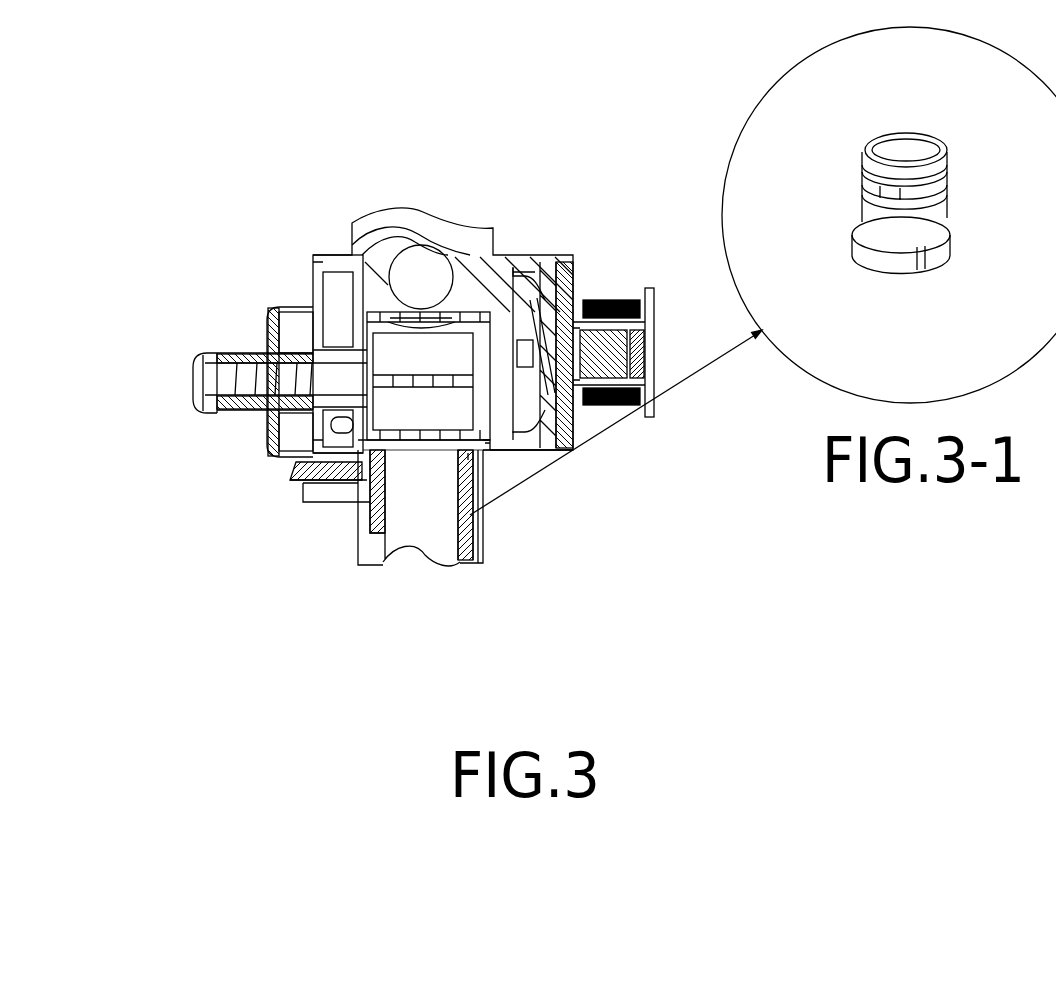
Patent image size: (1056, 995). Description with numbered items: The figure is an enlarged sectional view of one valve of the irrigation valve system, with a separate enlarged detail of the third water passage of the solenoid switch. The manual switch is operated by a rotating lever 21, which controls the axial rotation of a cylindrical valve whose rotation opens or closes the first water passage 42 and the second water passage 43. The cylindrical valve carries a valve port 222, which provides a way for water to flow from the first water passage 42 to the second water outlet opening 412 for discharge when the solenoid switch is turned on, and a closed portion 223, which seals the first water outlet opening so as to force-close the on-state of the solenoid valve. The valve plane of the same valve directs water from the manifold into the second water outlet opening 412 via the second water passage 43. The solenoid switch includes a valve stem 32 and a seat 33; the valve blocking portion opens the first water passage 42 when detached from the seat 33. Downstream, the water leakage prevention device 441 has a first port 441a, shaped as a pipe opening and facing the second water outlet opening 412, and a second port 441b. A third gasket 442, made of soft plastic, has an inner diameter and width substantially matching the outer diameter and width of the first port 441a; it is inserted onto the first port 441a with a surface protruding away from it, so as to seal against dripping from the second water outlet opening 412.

In FIG. 3, the rotating lever 21 is at (217, 410).
In FIG. 3, the valve port 222 is at (422, 318).
In FIG. 3, the closed portion 223 is at (373, 453).
In FIG. 3, the second water passage 43 is at (345, 300).
In FIG. 3, the first water passage 42 is at (524, 393).
In FIG. 3, the seat 33 is at (573, 262).
In FIG. 3, the valve stem 32 is at (600, 300).
In FIG. 3, the second water outlet opening 412 is at (423, 468).
In FIG. 3, the water leakage prevention device 441 is at (466, 527).
In FIG. 3-1, the water leakage prevention device 441 is at (948, 210).
In FIG. 3, the first port 441a is at (468, 453).
In FIG. 3, the second port 441b is at (478, 563).
In FIG. 3-1, the second port 441b is at (884, 262).
In FIG. 3, the third gasket 442 is at (487, 440).
In FIG. 3-1, the third gasket 442 is at (863, 160).